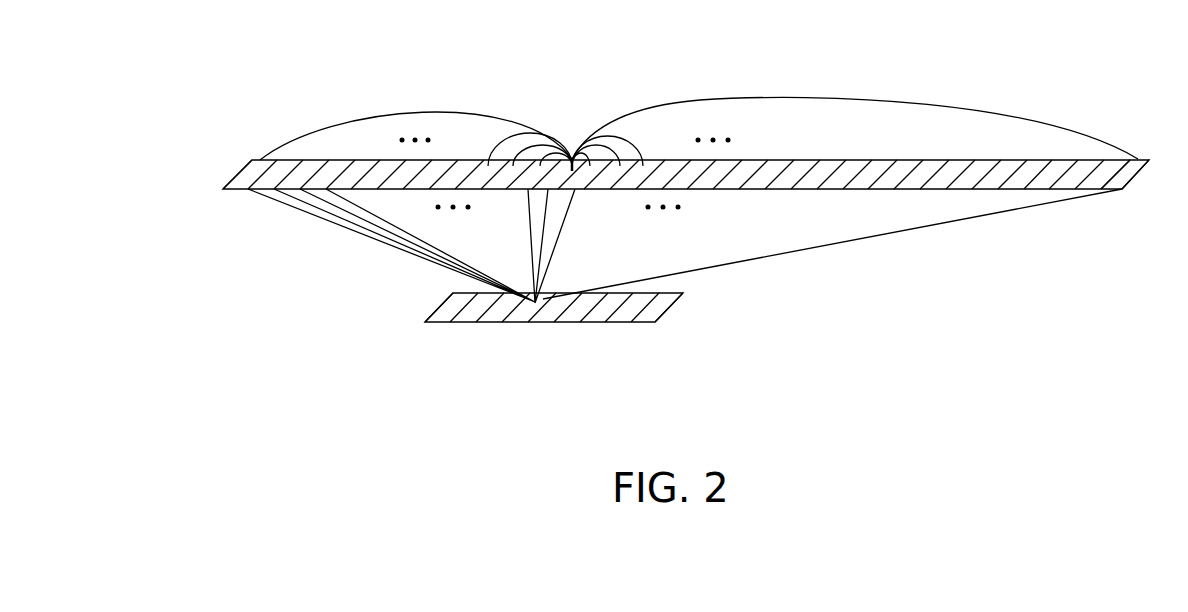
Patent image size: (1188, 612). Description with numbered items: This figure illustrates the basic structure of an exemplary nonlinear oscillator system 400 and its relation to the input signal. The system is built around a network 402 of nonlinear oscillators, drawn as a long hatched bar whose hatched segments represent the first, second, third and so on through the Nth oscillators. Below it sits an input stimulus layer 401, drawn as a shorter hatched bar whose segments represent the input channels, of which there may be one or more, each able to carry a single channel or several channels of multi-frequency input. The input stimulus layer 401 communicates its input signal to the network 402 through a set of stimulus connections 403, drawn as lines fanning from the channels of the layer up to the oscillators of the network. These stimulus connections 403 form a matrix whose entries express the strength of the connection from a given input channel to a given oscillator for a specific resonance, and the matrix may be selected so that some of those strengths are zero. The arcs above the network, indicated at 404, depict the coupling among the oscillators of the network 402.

The optical system 400 is at (342, 46).
The input stimulus layer 401 is at (695, 307).
The network 402 is at (222, 168).
The stimulus connections 403 is at (315, 233).
The incident light 404 is at (588, 103).